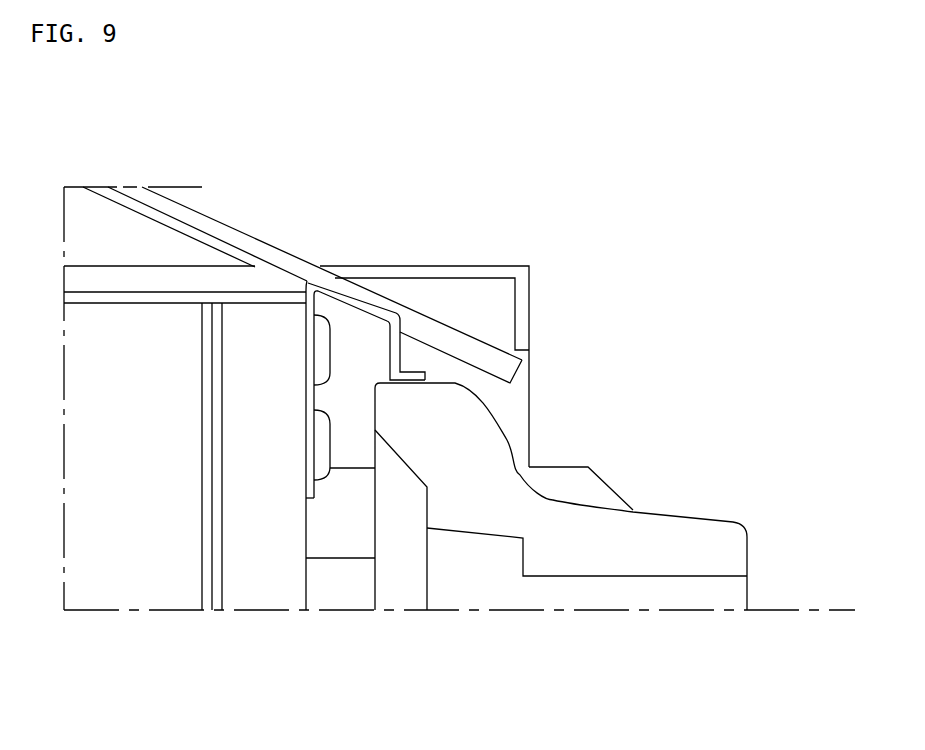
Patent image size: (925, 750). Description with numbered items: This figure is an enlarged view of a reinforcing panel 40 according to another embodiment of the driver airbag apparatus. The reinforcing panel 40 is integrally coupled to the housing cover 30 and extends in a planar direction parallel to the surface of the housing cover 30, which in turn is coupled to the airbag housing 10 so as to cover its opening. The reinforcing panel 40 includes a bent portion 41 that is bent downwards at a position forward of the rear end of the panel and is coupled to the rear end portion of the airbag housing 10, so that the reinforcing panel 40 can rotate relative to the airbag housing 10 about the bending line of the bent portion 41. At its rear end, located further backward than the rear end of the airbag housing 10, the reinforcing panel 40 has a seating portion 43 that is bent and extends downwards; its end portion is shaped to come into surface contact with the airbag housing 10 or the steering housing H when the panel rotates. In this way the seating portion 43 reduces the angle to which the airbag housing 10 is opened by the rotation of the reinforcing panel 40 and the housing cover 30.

The airbag housing 10 is at (218, 603).
The housing cover 30 is at (213, 223).
The reinforcing panel 40 is at (285, 257).
The bent portion 41 is at (312, 440).
The seating portion 43 is at (400, 352).
The steering housing H is at (675, 532).